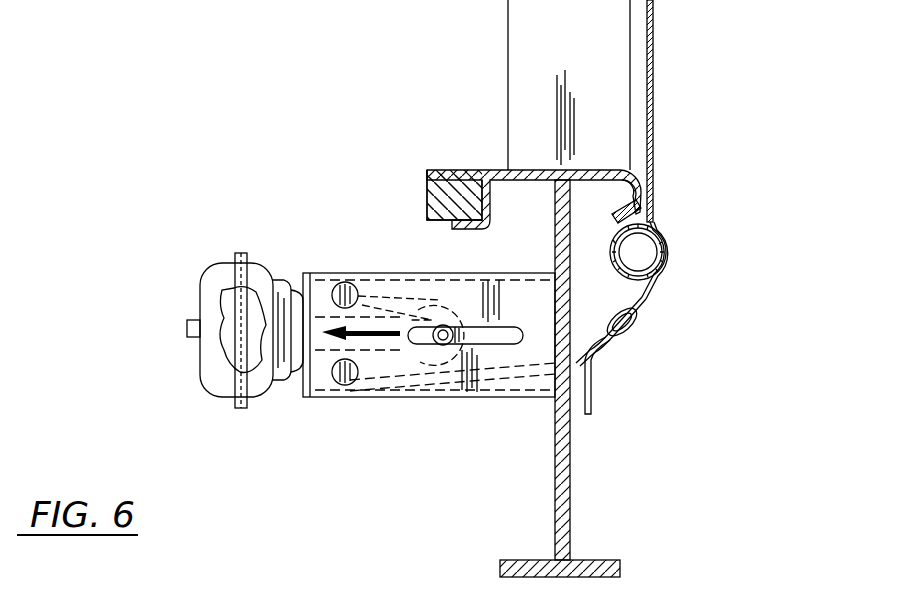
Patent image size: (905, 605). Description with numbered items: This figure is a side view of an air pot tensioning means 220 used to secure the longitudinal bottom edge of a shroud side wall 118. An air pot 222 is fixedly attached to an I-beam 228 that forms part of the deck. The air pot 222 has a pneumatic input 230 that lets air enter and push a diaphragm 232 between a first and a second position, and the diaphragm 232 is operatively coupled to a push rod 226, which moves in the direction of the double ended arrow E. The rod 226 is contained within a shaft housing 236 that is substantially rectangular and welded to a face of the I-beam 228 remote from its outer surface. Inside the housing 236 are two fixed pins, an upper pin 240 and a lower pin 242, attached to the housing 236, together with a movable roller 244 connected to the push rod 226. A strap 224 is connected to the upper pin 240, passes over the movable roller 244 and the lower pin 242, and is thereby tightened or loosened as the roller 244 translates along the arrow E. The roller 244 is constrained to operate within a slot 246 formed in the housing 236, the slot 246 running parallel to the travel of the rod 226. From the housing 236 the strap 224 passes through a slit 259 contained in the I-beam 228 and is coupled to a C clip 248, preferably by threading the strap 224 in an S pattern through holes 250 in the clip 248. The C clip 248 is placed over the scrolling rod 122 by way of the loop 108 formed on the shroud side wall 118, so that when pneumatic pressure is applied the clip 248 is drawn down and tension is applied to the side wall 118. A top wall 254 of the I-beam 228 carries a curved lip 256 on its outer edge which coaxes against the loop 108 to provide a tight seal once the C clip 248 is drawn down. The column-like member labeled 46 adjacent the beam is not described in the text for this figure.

The column post 46 is at (590, 49).
The shroud side wall 118 is at (654, 20).
The top wall 254 is at (540, 170).
The loop 108 is at (655, 213).
The curved lip 256 is at (630, 177).
The C clip 248 is at (666, 248).
The scrolling rod 122 is at (659, 264).
The holes 250 is at (650, 289).
The strap 224 is at (592, 386).
The slit 259 is at (565, 398).
The I-beam 228 is at (569, 490).
The shaft housing 236 is at (425, 273).
The upper pin 240 is at (344, 292).
The lower pin 242 is at (343, 377).
The slot 246 is at (505, 346).
The movable roller 244 is at (430, 343).
The double ended arrow E is at (370, 337).
The air pot 222 is at (215, 265).
The pneumatic input 230 is at (188, 327).
The diaphragm 232 is at (232, 355).
The push rod 226 is at (320, 395).
The air pot tensioning means 220 is at (330, 208).